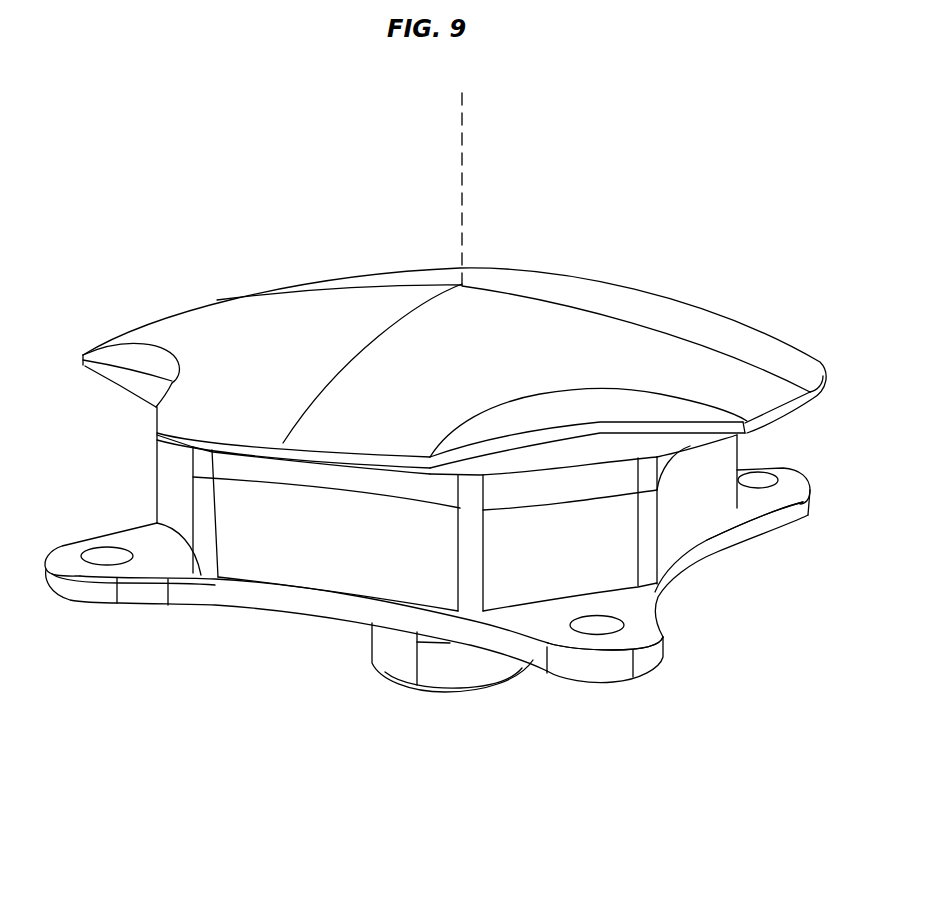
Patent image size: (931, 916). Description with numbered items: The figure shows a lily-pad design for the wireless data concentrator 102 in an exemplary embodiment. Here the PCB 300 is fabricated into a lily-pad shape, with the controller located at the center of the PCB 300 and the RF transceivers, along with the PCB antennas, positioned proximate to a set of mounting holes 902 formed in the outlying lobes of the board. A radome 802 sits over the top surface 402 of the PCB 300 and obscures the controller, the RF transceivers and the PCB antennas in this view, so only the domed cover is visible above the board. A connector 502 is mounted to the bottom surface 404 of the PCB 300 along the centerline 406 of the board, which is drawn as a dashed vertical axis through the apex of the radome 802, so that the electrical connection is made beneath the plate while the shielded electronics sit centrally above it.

The wireless data concentrator 102 is at (187, 190).
The PCB 300 is at (760, 500).
The top surface 402 is at (639, 612).
The bottom surface 404 is at (622, 704).
The centerline 406 is at (463, 140).
The connector 502 is at (392, 653).
The radome 802 is at (163, 467).
The mounting holes 902 is at (100, 553).